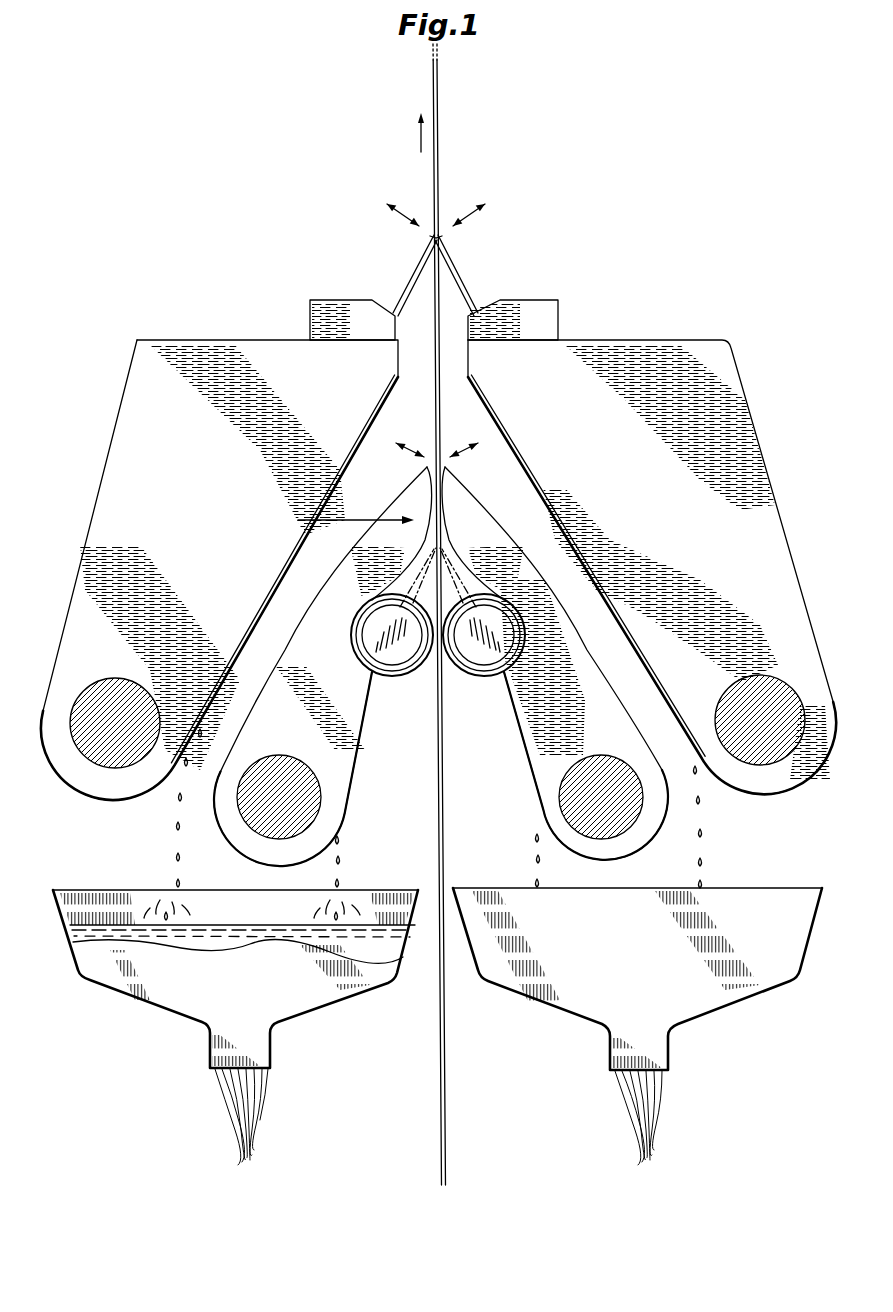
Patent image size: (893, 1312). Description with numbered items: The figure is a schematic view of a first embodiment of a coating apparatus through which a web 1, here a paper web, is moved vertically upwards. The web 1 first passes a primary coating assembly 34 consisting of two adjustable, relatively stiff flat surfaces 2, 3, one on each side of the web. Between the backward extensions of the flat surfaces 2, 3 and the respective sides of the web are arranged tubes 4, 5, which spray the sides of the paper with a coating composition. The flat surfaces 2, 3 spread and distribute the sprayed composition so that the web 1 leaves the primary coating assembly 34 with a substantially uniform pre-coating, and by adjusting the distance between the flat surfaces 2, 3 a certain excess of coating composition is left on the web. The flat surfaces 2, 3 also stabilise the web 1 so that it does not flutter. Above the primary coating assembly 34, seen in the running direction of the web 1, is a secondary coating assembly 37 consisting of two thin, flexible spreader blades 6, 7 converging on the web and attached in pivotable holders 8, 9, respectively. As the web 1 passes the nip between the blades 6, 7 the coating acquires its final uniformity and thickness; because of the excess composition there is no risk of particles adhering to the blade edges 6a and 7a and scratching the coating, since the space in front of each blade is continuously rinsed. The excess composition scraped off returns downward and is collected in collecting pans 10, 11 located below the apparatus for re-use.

The web 1 is at (438, 137).
The flat surface 2 is at (396, 498).
The flat surface 3 is at (475, 510).
The tube 4 is at (401, 650).
The tube 5 is at (479, 652).
The spreader blade 6 is at (417, 270).
The spreader blade 7 is at (470, 253).
The blade edge 6a is at (432, 237).
The blade edge 7a is at (440, 237).
The pivotable holder 8 is at (155, 352).
The pivotable holder 9 is at (712, 350).
The collecting pan 10 is at (337, 977).
The collecting pan 11 is at (578, 985).
The primary coating assembly 34 is at (342, 522).
The secondary coating assembly 37 is at (569, 334).